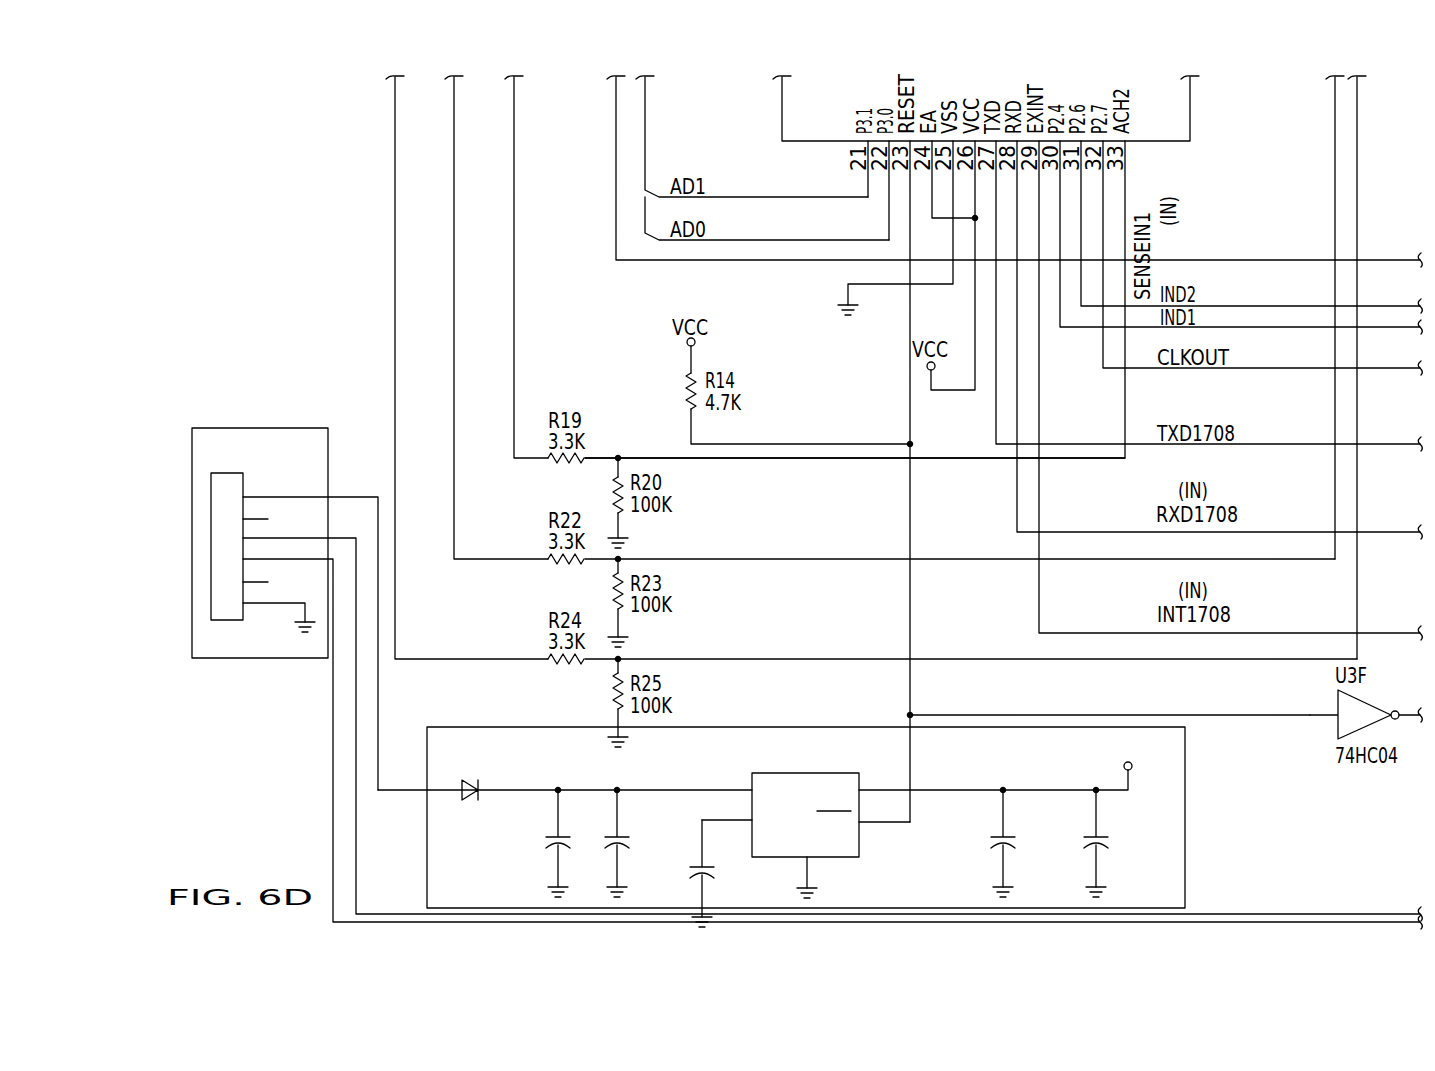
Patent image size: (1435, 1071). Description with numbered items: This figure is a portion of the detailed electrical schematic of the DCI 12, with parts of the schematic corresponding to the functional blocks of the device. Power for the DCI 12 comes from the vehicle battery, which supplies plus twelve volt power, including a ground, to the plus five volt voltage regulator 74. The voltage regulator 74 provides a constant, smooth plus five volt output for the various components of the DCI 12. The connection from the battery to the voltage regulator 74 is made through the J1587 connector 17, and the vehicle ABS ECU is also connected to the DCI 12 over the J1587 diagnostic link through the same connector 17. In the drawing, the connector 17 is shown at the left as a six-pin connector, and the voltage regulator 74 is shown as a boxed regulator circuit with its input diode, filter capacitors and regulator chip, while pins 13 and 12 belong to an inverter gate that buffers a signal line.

The J1587 connector 17 is at (241, 473).
The voltage regulator 74 is at (1186, 820).
The inverter U3F input pin 13 is at (1350, 714).
The DCI 12 is at (1406, 705).